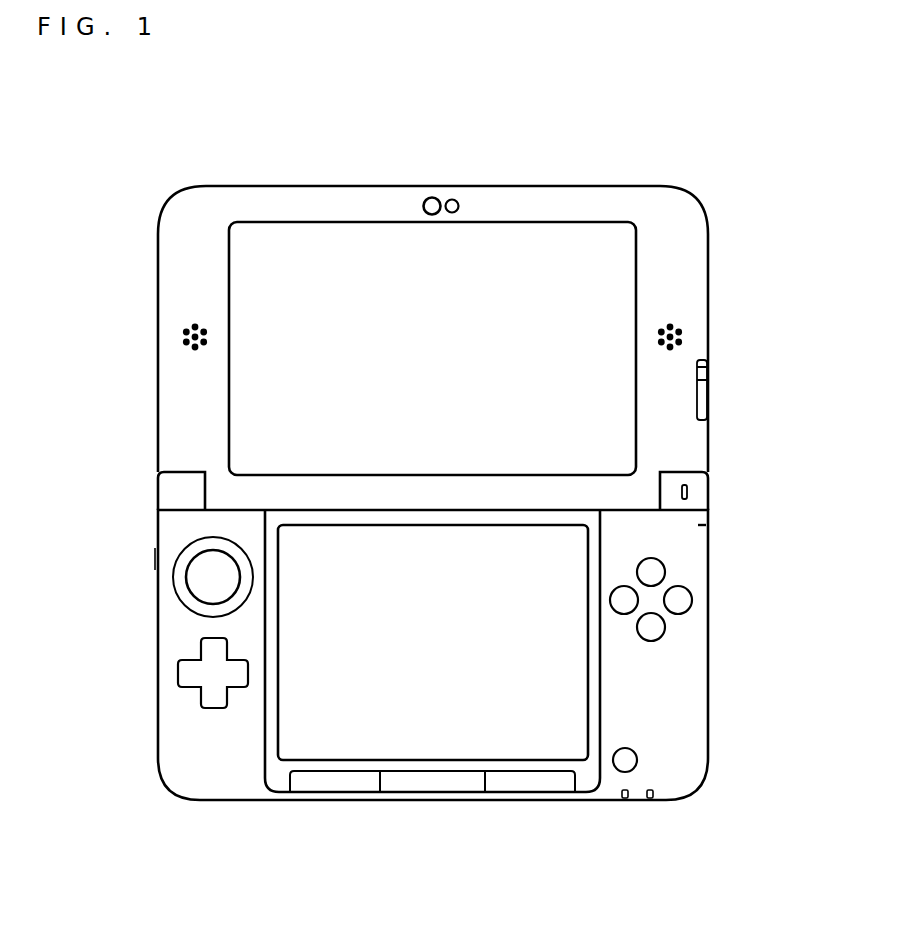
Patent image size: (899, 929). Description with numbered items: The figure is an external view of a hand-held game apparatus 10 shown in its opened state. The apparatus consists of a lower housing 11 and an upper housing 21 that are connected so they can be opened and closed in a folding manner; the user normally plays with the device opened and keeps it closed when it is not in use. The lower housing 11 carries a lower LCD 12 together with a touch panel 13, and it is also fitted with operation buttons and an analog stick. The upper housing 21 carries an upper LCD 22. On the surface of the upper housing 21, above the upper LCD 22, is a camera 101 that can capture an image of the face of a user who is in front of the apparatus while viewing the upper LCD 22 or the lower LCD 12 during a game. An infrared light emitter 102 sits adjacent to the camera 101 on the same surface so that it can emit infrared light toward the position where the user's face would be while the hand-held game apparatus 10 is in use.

The hand-held game apparatus 10 is at (117, 109).
The lower housing 11 is at (158, 633).
The lower LCD 12 is at (567, 734).
The touch panel 13 is at (433, 642).
The upper housing 21 is at (158, 378).
The upper LCD 22 is at (607, 277).
The camera 101 is at (426, 196).
The infrared light emitter 102 is at (458, 198).